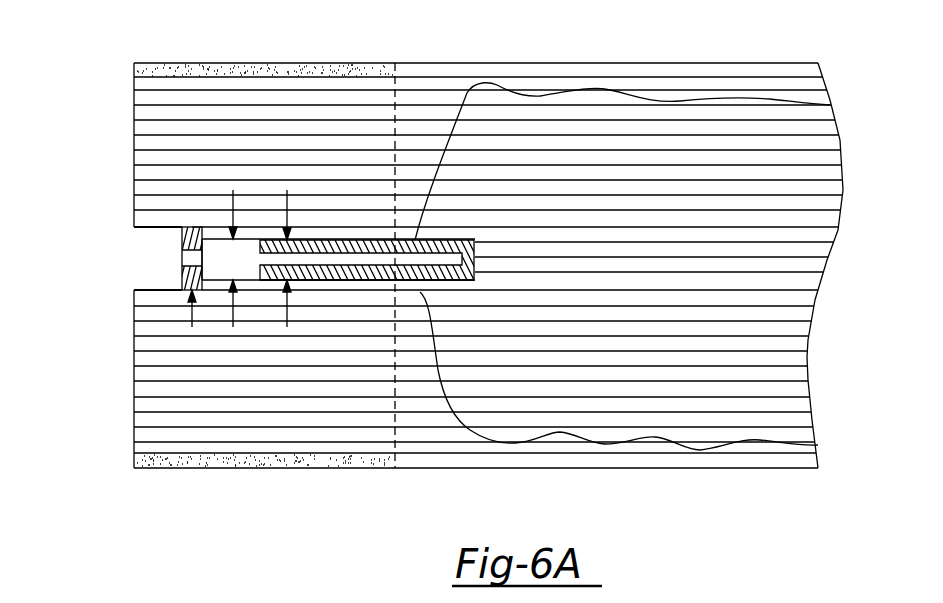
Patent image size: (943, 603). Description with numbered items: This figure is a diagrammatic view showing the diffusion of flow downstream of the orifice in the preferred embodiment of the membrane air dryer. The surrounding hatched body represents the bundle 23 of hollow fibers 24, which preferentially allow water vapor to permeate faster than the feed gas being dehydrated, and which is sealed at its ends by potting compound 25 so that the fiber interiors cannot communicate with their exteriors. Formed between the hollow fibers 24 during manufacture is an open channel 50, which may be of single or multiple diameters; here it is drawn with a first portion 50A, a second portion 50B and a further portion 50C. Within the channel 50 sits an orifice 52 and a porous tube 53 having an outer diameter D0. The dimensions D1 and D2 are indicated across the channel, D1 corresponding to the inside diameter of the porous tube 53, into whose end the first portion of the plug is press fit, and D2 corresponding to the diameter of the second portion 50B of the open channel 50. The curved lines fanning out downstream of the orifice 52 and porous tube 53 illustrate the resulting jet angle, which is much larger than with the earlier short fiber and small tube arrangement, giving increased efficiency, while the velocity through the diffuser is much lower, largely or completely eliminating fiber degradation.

The bundle 23 is at (124, 402).
The hollow fibers 24 is at (134, 160).
The potting compound 25 is at (134, 73).
The open channel 50 is at (134, 281).
The first portion of open channel 50A is at (155, 230).
The second portion of open channel 50B is at (249, 246).
The third portion of open channel 50C is at (330, 282).
The orifice 52 is at (182, 241).
The porous tube 53 is at (303, 240).
The first diameter D1 is at (192, 216).
The second diameter D2 is at (233, 315).
The outer diameter D0 is at (287, 315).